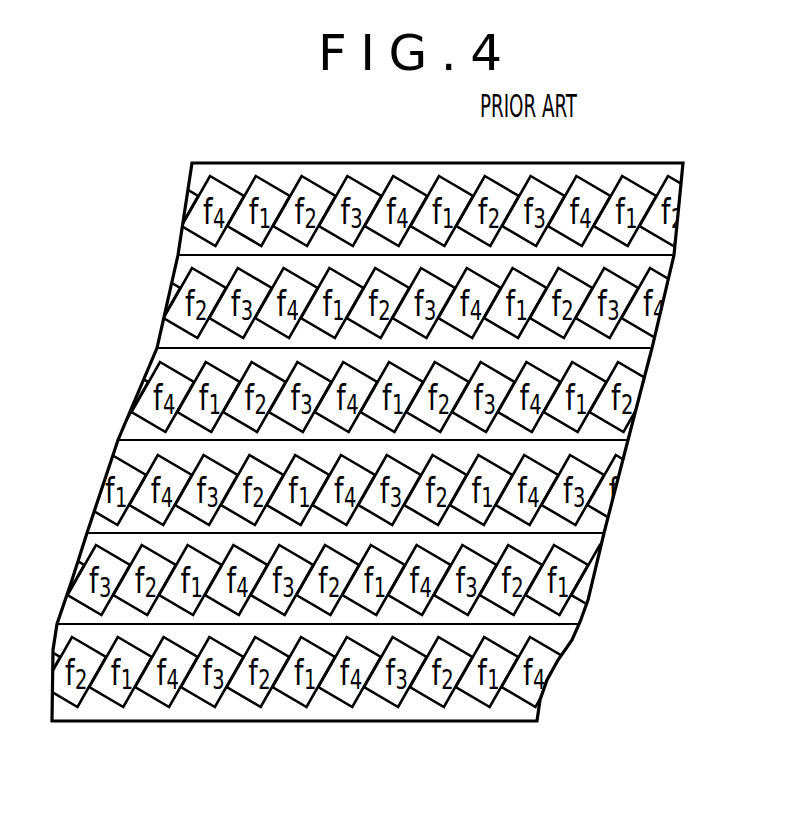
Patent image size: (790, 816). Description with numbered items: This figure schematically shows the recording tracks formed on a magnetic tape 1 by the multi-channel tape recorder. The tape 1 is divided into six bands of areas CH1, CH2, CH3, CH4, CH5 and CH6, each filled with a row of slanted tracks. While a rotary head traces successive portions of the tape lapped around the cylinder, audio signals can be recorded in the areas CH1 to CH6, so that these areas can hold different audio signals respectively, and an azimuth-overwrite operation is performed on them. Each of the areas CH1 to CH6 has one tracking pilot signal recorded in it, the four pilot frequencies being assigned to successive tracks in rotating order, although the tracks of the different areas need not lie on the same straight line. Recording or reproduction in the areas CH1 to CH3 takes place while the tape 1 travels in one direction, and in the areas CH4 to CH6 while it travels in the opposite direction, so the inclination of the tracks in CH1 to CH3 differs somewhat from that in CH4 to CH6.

The magnetic tape 1 is at (282, 163).
The audio recording area CH1 is at (543, 682).
The audio recording area CH2 is at (595, 579).
The audio recording area CH3 is at (613, 492).
The audio recording area CH4 is at (632, 400).
The audio recording area CH5 is at (663, 307).
The audio recording area CH6 is at (680, 226).